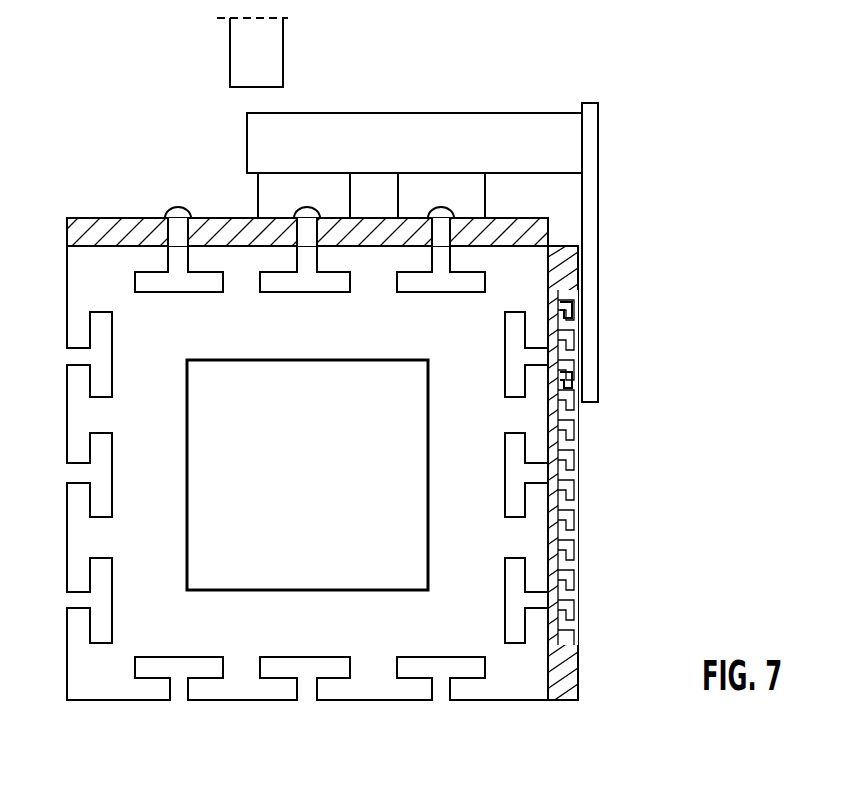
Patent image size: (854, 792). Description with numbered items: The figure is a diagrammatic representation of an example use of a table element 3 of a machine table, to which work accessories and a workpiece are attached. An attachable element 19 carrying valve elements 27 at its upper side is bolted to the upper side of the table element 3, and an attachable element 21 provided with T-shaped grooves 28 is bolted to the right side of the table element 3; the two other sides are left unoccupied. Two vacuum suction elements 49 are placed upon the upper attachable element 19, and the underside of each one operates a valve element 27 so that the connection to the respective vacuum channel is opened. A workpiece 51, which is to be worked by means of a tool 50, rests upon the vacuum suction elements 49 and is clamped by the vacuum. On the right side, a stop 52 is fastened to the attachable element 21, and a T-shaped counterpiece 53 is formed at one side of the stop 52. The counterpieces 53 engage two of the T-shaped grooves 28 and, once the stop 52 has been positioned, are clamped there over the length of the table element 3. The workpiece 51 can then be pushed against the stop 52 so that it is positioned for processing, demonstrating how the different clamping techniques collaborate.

The table element 3 is at (579, 704).
The attachable element 19 is at (100, 230).
The attachable element 21 is at (568, 673).
The valve element 27 is at (180, 212).
The T-shaped grooves 28 is at (568, 502).
The vacuum suction elements 49 is at (268, 190).
The tool 50 is at (283, 43).
The workpiece 51 is at (392, 132).
The stop 52 is at (598, 208).
The T-shaped counterpiece 53 is at (577, 317).